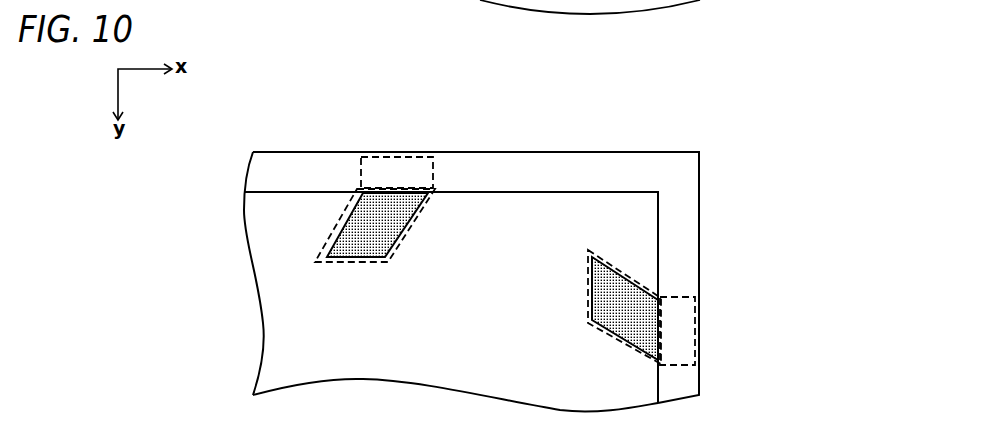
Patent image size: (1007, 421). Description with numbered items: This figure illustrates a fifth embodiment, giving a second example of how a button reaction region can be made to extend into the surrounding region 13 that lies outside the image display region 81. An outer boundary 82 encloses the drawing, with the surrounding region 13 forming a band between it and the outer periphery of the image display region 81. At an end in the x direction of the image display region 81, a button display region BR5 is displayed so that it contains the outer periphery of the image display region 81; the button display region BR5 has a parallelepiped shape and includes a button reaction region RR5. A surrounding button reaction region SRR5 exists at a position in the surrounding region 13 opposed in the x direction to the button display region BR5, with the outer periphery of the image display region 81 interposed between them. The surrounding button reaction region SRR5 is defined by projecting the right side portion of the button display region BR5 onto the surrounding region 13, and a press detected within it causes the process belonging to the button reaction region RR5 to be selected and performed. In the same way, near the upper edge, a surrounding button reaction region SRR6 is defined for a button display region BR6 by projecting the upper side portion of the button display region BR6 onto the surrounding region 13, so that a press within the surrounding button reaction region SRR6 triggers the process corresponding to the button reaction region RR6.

The surrounding region 13 is at (268, 172).
The image display region 81 is at (625, 190).
The outer edge of substrate 82 is at (562, 150).
The button reaction region RR6 is at (342, 220).
The surrounding button reaction region SRR6 is at (358, 175).
The button display region BR6 is at (383, 222).
The button reaction region RR5 is at (630, 275).
The surrounding button reaction region SRR5 is at (673, 295).
The button display region BR5 is at (623, 320).